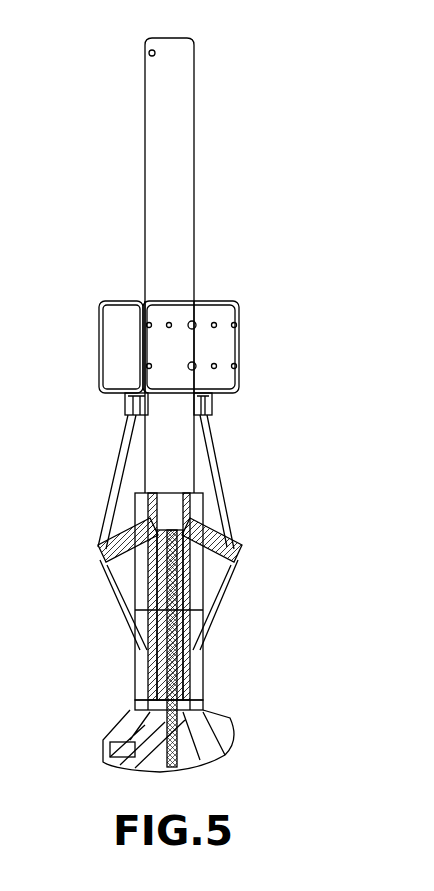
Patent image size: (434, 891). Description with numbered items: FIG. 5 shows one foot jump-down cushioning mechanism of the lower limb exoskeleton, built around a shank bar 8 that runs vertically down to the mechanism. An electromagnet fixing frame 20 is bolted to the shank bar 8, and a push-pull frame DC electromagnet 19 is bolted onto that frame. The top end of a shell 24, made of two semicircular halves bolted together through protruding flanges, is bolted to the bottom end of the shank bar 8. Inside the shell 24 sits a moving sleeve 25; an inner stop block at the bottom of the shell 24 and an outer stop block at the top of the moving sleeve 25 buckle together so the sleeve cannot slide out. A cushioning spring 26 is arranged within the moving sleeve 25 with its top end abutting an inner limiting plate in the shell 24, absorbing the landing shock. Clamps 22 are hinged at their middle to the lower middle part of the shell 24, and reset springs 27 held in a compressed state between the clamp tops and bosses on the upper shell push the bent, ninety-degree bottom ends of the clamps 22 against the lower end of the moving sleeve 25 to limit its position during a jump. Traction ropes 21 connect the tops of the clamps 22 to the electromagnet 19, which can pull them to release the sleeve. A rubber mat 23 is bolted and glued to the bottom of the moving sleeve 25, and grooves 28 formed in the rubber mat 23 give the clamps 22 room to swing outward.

The shank bar 8 is at (182, 118).
The electromagnet 19 is at (123, 329).
The electromagnet fixing frame 20 is at (180, 353).
The traction rope 21 is at (117, 495).
The clamp 22 is at (103, 583).
The rubber mat 23 is at (108, 740).
The shell 24 is at (204, 682).
The moving sleeve 25 is at (177, 690).
The cushioning spring 26 is at (224, 568).
The reset spring 27 is at (222, 540).
The groove 28 is at (143, 712).